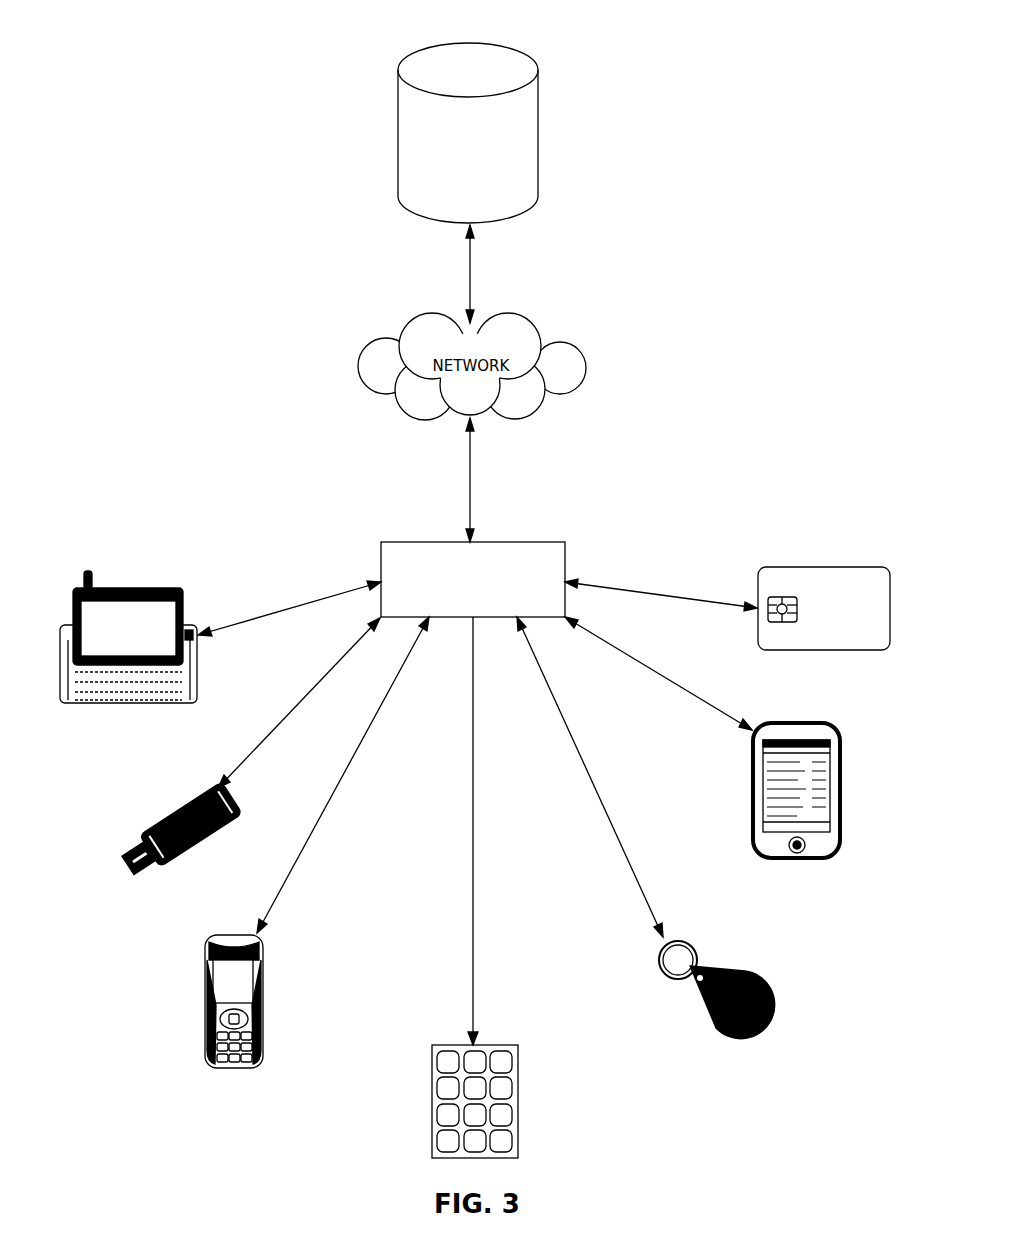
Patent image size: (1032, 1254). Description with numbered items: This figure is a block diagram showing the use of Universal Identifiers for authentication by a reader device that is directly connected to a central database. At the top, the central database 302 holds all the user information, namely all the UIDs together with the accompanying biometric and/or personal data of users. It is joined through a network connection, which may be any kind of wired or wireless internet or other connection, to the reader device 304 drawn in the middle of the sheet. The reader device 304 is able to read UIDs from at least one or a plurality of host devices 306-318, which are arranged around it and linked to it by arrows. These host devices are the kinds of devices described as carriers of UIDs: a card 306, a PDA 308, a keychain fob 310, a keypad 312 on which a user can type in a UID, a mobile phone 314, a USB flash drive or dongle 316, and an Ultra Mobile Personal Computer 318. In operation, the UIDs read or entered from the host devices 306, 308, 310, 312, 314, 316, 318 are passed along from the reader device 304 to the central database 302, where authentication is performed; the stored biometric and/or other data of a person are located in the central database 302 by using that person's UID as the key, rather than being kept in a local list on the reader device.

The central database 302 is at (538, 131).
The reader device 304 is at (532, 540).
The host device 306 is at (848, 565).
The host device 308 is at (841, 788).
The host device 310 is at (780, 993).
The host device 312 is at (520, 1103).
The host device 314 is at (197, 1008).
The host device 316 is at (130, 838).
The host device 318 is at (80, 578).